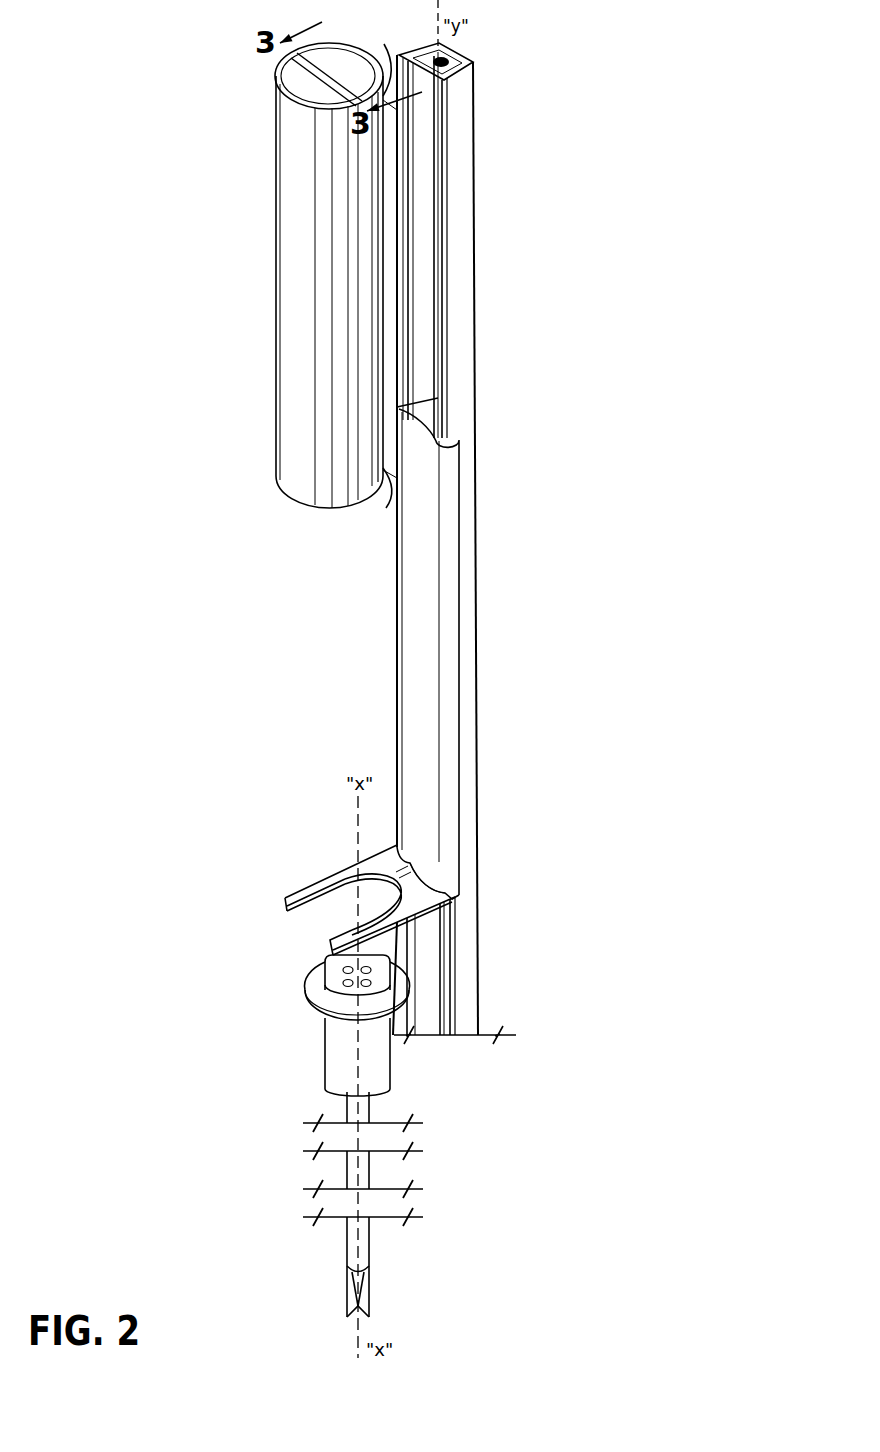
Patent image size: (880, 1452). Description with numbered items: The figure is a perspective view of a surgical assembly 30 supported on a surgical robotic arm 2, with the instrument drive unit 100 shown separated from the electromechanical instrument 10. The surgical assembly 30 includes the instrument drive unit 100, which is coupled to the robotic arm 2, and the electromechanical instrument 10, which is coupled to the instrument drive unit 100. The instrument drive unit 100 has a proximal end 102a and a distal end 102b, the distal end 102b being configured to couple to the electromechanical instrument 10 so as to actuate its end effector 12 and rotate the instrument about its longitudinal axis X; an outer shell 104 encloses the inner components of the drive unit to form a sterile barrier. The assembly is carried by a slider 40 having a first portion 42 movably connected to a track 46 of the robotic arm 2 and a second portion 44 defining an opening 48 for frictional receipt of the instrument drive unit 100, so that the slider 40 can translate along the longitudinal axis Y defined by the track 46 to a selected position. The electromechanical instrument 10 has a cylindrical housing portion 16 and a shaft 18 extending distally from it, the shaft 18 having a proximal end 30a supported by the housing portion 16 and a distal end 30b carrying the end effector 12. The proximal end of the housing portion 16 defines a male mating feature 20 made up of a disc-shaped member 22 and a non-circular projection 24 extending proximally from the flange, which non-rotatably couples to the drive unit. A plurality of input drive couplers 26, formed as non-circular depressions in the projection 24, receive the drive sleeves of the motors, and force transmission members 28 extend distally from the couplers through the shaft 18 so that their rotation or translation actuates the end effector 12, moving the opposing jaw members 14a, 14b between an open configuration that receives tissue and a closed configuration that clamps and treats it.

The surgical robotic arm 2 is at (476, 384).
The electromechanical instrument 10 is at (210, 1008).
The end effector 12 is at (345, 1292).
The jaw member 14a is at (350, 1307).
The jaw member 14b is at (368, 1298).
The housing portion 16 is at (393, 1058).
The shaft 18 is at (345, 1172).
The male mating feature 20 is at (320, 975).
The disc-shaped member 22 is at (410, 1007).
The projection 24 is at (392, 972).
The input drive couplers 26 is at (344, 983).
The force transmission members 28 is at (330, 1056).
The surgical assembly 30 is at (245, 528).
The proximal end of shaft 30a is at (374, 1102).
The distal end of shaft 30b is at (348, 1245).
The slider 40 is at (395, 638).
The first portion of slider 42 is at (455, 487).
The second portion of slider 44 is at (433, 888).
The track 46 is at (476, 243).
The opening 48 is at (325, 900).
The instrument drive unit 100 is at (248, 293).
The proximal end of instrument drive unit 102a is at (369, 59).
The distal end of instrument drive unit 102b is at (375, 500).
The outer shell 104 is at (277, 160).